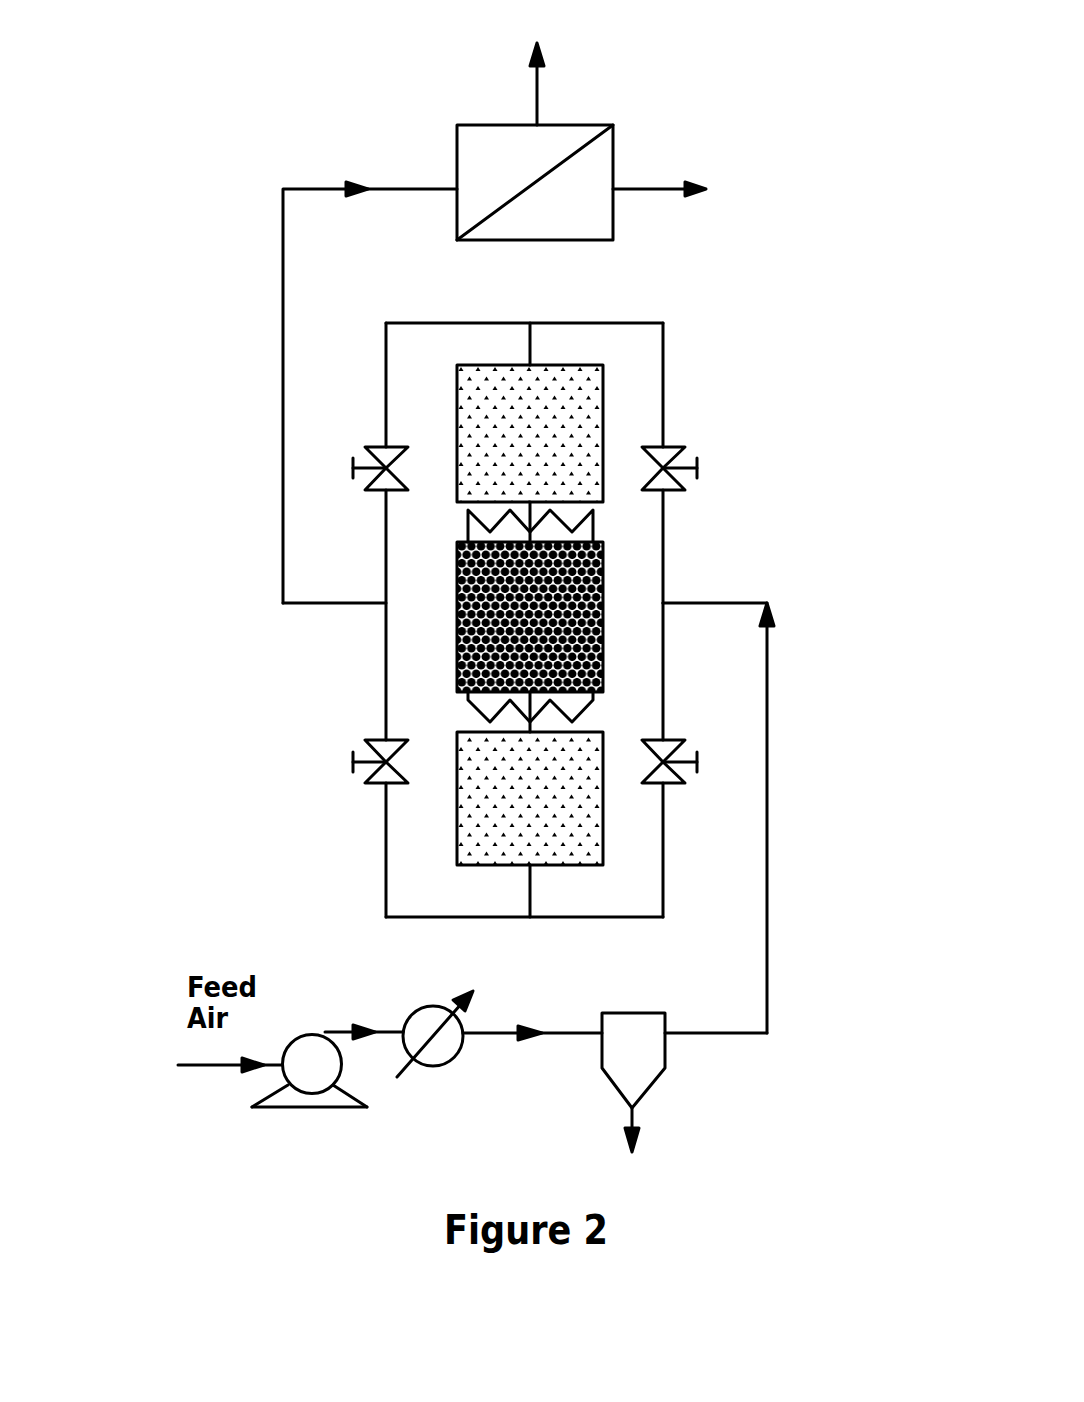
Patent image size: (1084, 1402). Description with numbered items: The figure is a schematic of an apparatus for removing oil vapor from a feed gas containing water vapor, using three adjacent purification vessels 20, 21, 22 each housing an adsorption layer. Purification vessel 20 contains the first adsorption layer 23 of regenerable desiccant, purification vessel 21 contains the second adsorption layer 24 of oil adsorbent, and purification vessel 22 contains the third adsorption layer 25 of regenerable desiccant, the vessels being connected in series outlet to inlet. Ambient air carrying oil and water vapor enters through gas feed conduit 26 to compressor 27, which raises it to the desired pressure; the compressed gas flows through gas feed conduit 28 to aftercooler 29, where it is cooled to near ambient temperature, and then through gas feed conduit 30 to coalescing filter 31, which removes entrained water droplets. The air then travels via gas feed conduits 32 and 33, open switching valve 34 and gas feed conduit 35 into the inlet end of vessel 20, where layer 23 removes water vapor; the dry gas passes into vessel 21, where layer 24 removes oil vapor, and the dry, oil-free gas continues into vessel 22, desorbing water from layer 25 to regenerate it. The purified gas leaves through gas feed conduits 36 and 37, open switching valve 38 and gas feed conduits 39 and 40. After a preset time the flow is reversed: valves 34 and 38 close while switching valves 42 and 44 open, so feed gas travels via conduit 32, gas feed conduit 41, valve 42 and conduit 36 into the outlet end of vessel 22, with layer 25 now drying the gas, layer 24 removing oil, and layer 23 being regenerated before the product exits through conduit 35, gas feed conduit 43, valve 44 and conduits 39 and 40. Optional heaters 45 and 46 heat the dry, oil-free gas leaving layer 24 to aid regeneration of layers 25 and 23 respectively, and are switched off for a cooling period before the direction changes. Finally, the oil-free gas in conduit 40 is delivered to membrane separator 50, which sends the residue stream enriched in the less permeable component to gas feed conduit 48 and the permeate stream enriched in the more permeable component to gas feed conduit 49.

The purification vessel 20 is at (457, 843).
The purification vessel 21 is at (457, 637).
The purification vessel 22 is at (457, 416).
The first adsorption layer 23 is at (595, 838).
The second adsorption layer 24 is at (603, 622).
The third adsorption layer 25 is at (580, 442).
The gas feed conduit 26 is at (222, 1065).
The compressor 27 is at (307, 1107).
The gas feed conduit 28 is at (383, 1032).
The aftercooler 29 is at (440, 1072).
The gas feed conduit 30 is at (580, 1033).
The coalescing filter 31 is at (642, 1087).
The gas feed conduit 32 is at (767, 822).
The gas feed conduit 33 is at (663, 677).
The switching valve 34 is at (700, 757).
The gas feed conduit 35 is at (534, 905).
The gas feed conduit 36 is at (533, 360).
The gas feed conduit 37 is at (386, 376).
The switching valve 38 is at (353, 463).
The gas feed conduit 39 is at (308, 603).
The gas feed conduit 40 is at (283, 268).
The gas feed conduit 41 is at (663, 552).
The switching valve 42 is at (700, 462).
The gas feed conduit 43 is at (386, 853).
The switching valve 44 is at (353, 758).
The heater 45 is at (595, 530).
The heater 46 is at (594, 710).
The gas feed conduit 48 is at (537, 67).
The gas feed conduit 49 is at (681, 190).
The membrane separator 50 is at (613, 153).